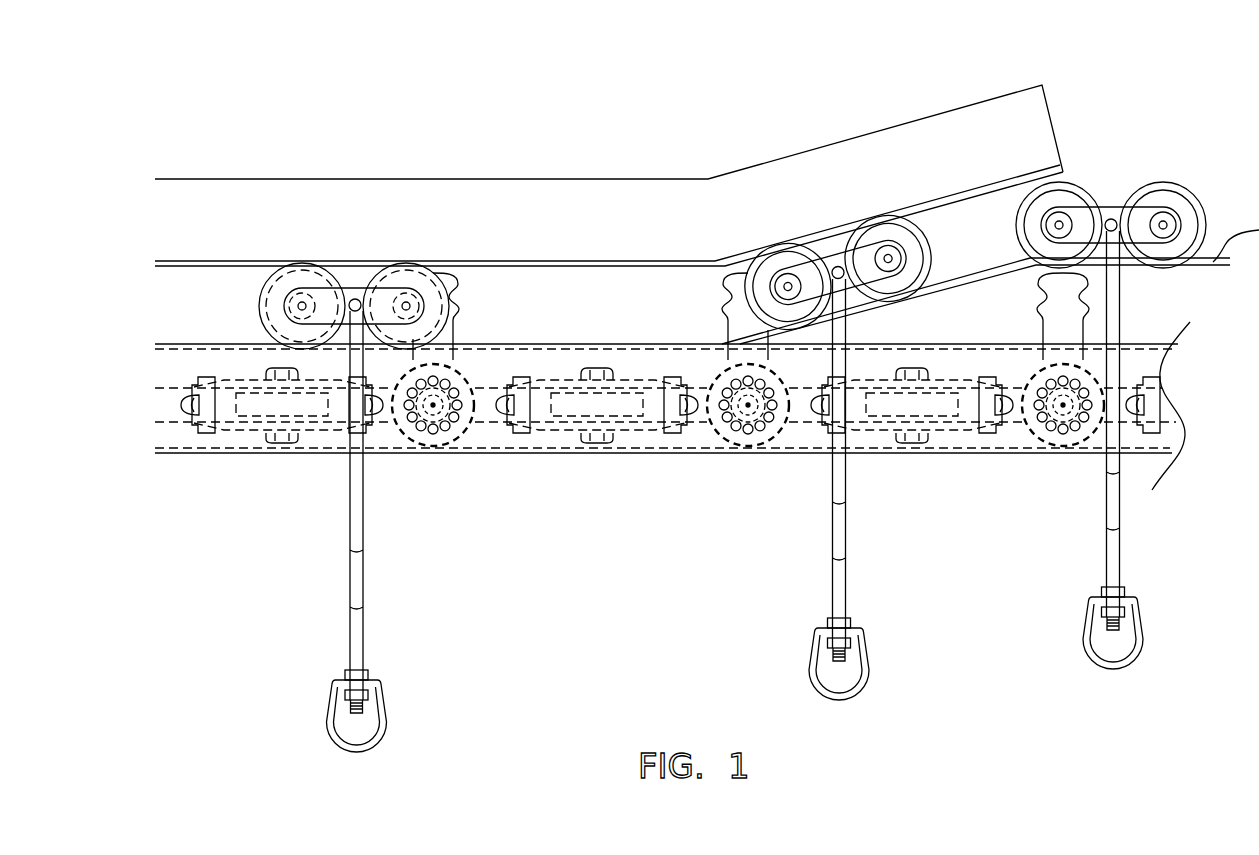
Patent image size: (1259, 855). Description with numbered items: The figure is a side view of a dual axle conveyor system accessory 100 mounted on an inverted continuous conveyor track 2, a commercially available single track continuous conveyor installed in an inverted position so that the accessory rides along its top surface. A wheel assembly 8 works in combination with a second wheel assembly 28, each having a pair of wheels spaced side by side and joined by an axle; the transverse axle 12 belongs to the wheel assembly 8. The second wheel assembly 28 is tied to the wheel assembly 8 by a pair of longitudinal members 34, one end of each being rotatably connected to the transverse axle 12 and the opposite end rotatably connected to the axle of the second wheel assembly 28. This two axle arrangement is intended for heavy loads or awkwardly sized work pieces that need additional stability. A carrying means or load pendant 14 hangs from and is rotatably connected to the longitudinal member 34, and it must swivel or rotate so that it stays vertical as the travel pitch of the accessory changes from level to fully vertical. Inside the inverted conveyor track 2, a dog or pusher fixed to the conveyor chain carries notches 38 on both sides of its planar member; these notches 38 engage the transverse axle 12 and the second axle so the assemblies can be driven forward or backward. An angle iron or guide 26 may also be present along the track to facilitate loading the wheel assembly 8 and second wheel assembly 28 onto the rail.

The dual axle conveyor system accessory 100 is at (445, 148).
The angle iron or guide 26 is at (737, 165).
The inverted continuous conveyor track 2 is at (257, 457).
The notches 38 is at (685, 316).
The transverse axle 12 is at (354, 283).
The carrying means or load pendant 14 is at (360, 500).
The wheel assembly 8 is at (1078, 176).
The second wheel assembly 28 is at (1190, 183).
The longitudinal members 34 is at (1113, 200).